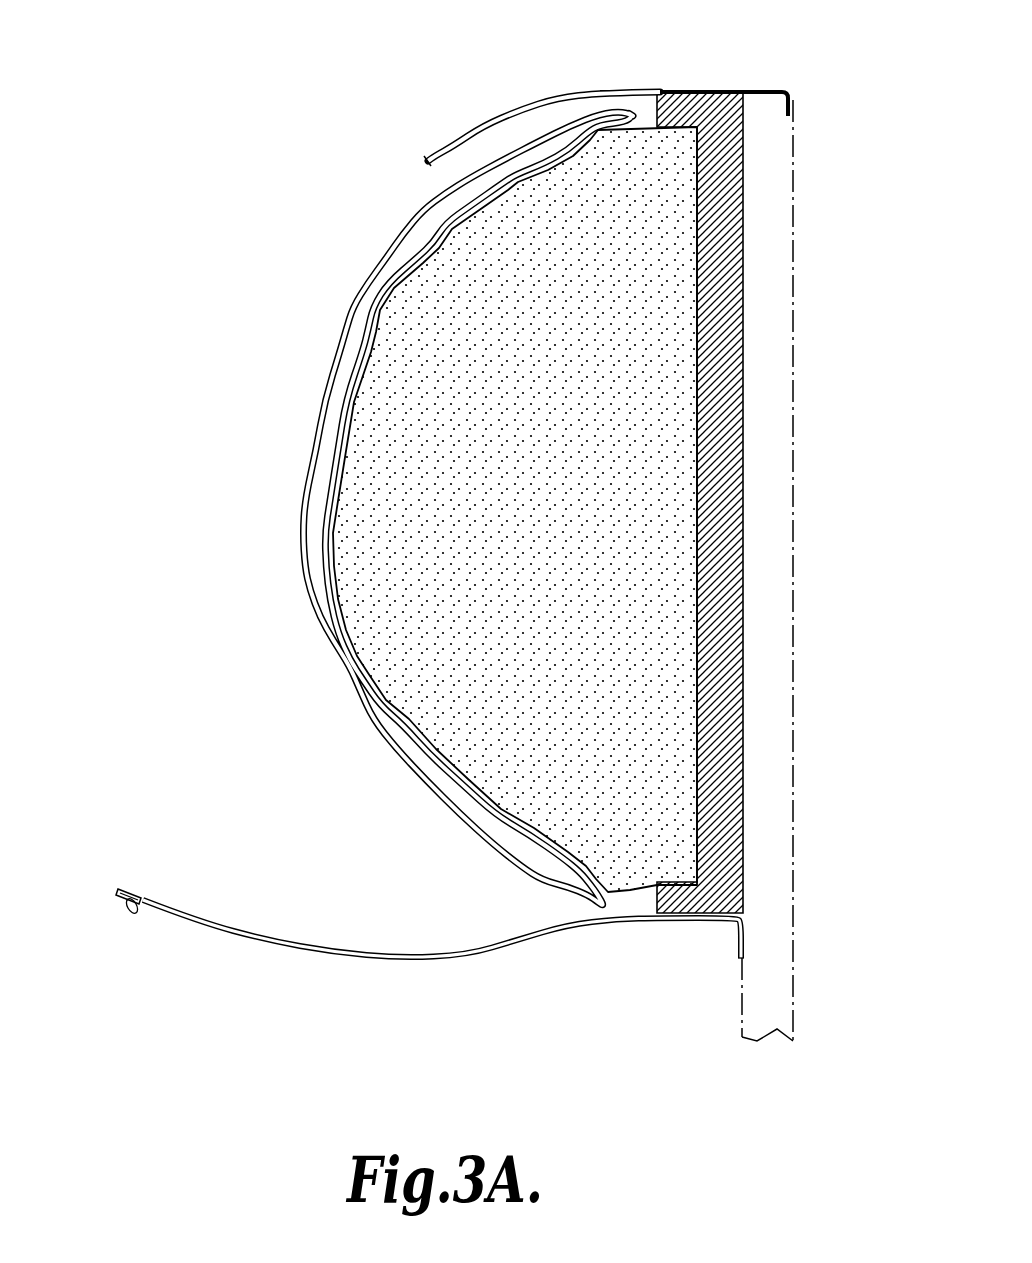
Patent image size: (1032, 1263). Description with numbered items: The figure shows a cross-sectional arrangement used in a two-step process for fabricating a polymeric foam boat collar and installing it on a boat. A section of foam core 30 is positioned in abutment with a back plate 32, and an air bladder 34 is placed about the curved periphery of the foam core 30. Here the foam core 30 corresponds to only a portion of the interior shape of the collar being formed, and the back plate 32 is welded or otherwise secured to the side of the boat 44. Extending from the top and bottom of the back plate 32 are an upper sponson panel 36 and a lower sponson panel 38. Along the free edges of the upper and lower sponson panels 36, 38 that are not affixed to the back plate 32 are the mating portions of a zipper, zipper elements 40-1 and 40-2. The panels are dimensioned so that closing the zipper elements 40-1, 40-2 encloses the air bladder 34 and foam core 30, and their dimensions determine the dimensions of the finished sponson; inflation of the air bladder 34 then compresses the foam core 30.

The foam core 30 is at (655, 358).
The back plate 32 is at (723, 498).
The air bladder 34 is at (358, 688).
The upper sponson panel 36 is at (611, 90).
The lower sponson panel 38 is at (487, 955).
The zipper element 40-1 is at (428, 160).
The zipper element 40-2 is at (122, 887).
The side of the boat 44 is at (786, 114).